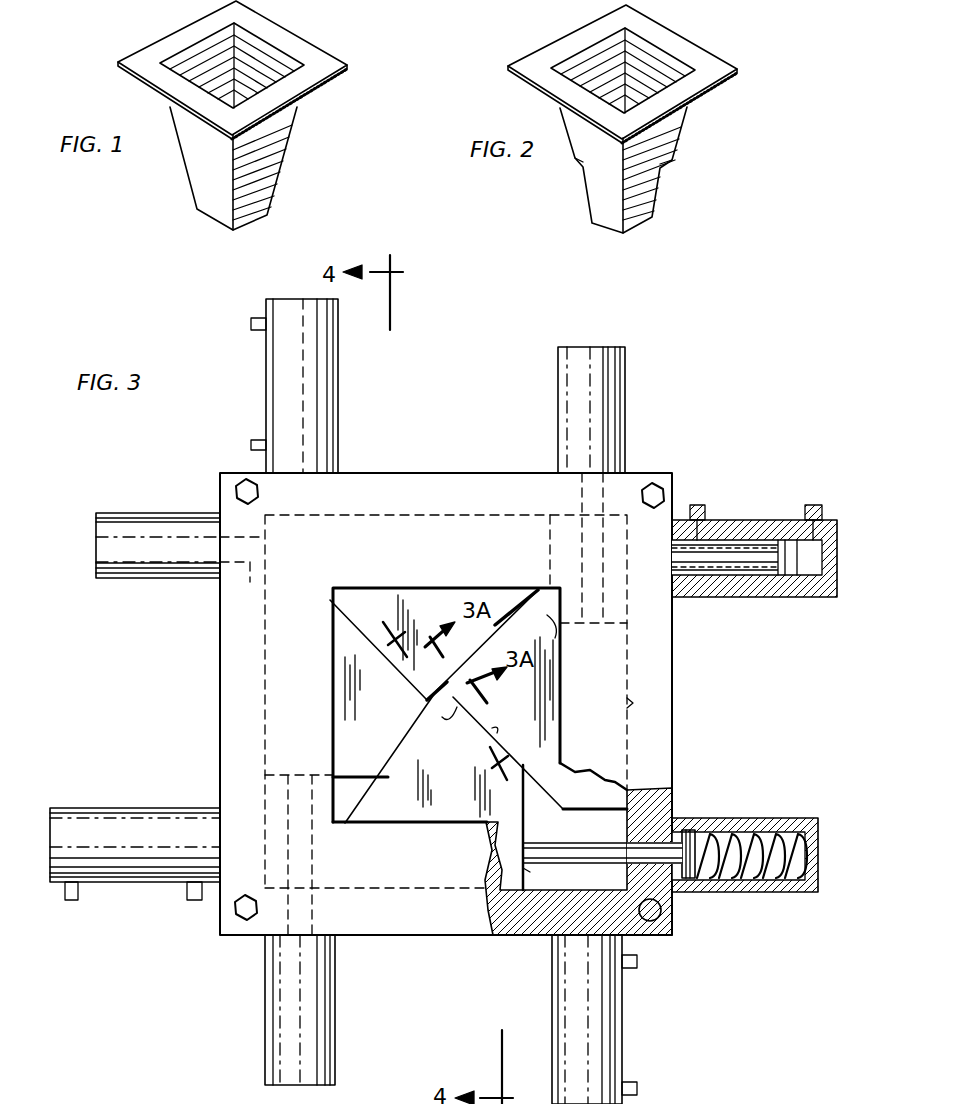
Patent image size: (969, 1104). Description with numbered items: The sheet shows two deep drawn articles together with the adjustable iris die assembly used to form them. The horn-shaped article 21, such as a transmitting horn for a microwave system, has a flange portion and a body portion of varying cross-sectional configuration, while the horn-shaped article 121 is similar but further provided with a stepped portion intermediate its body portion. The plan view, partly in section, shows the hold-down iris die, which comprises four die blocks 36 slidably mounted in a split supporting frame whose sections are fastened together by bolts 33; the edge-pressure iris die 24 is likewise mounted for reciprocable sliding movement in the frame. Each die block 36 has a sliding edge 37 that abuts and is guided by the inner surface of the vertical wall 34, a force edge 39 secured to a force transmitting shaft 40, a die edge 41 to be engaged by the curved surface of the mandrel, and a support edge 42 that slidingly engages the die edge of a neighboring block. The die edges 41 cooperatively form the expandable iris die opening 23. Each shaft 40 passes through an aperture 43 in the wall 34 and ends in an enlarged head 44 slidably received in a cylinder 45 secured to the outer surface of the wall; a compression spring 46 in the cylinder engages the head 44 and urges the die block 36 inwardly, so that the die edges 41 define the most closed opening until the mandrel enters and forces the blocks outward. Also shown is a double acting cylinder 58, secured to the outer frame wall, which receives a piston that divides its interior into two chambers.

In FIG. 1, the horn-shaped article 21 is at (283, 150).
In FIG. 2, the horn-shaped article 121 is at (683, 135).
In FIG. 3, the iris die opening 23 is at (438, 702).
In FIG. 3, the edge-pressure iris die 24 is at (350, 595).
In FIG. 3, the bolts 33 is at (240, 490).
In FIG. 3, the vertical wall 34 is at (647, 647).
In FIG. 3, the die blocks 36 is at (350, 642).
In FIG. 3, the sliding edge 37 is at (633, 703).
In FIG. 3, the force edge 39 is at (560, 630).
In FIG. 3, the force transmitting shaft 40 is at (232, 572).
In FIG. 3, the die edge 41 is at (442, 717).
In FIG. 3, the support edge 42 is at (493, 625).
In FIG. 3, the apertures 43 is at (590, 480).
In FIG. 3, the enlarged head 44 is at (690, 830).
In FIG. 3, the cylinder 45 is at (558, 397).
In FIG. 3, the compression spring 46 is at (737, 873).
In FIG. 3, the double acting cylinder 58 is at (266, 385).